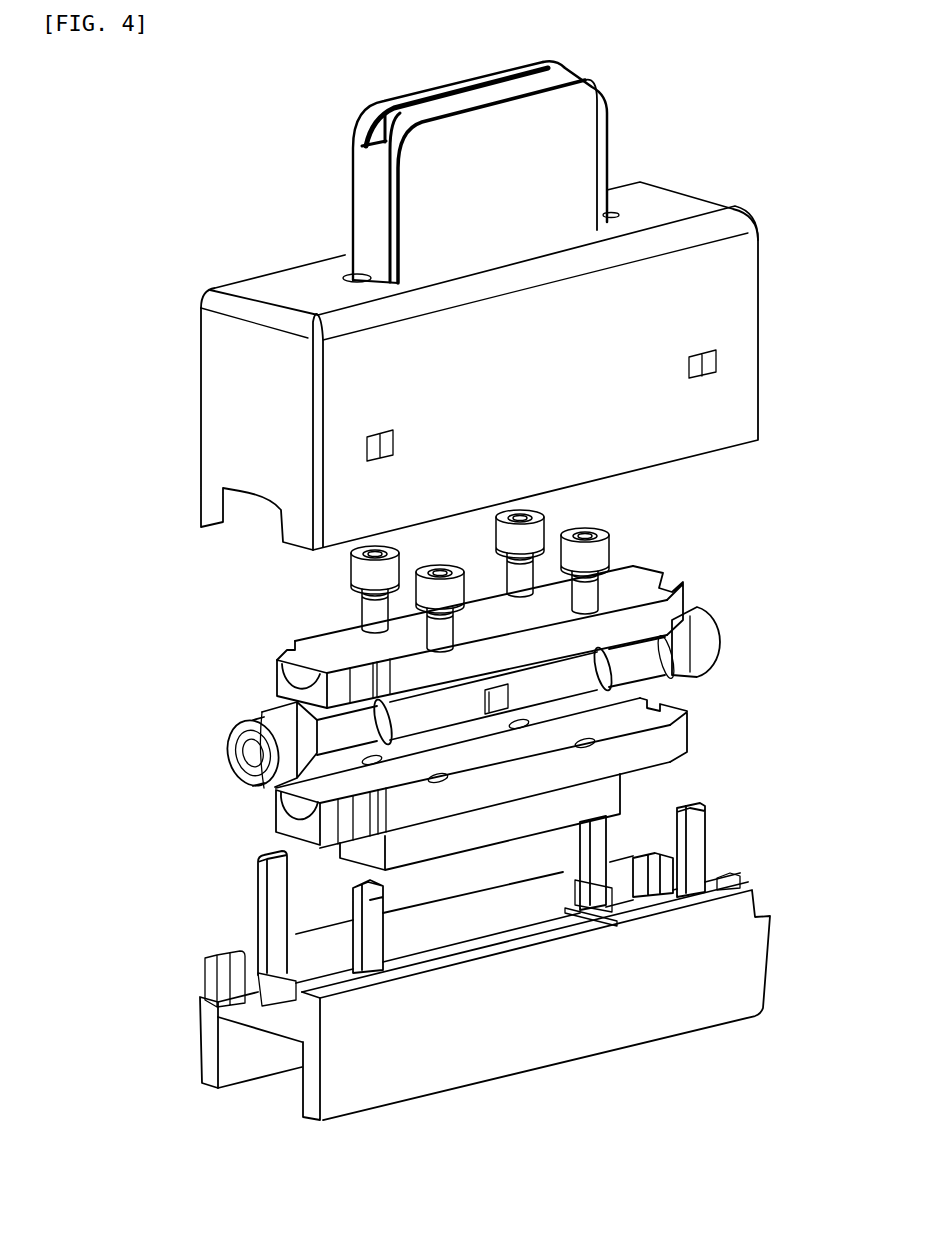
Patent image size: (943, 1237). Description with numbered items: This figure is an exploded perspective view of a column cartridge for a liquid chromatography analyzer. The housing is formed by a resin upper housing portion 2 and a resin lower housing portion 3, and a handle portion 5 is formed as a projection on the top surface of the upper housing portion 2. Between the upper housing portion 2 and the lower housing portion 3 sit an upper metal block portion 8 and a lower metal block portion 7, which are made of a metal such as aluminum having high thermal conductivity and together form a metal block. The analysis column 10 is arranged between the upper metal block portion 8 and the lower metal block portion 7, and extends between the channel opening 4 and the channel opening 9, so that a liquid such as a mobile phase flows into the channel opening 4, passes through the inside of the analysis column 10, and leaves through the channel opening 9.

The upper housing portion 2 is at (735, 358).
The lower housing portion 3 is at (573, 1026).
The channel opening 4 is at (252, 752).
The handle portion 5 is at (574, 165).
The lower metal block portion 7 is at (281, 817).
The upper metal block portion 8 is at (290, 672).
The channel opening 9 is at (727, 640).
The analysis column 10 is at (637, 670).